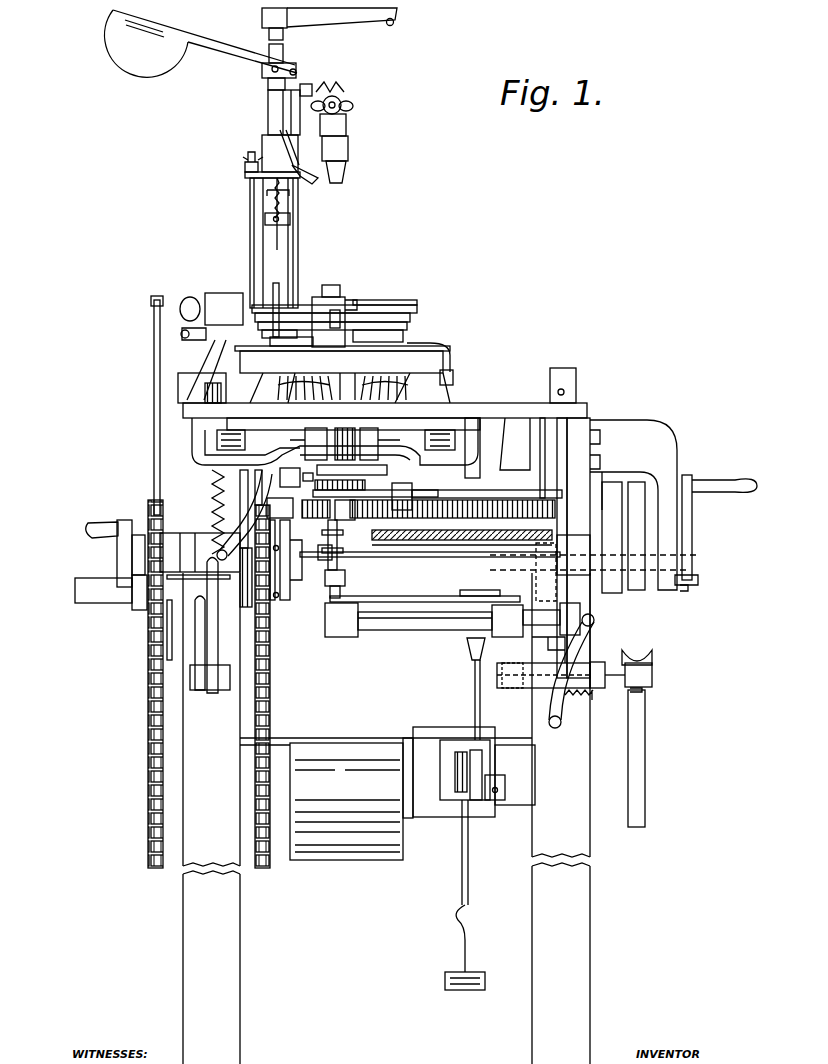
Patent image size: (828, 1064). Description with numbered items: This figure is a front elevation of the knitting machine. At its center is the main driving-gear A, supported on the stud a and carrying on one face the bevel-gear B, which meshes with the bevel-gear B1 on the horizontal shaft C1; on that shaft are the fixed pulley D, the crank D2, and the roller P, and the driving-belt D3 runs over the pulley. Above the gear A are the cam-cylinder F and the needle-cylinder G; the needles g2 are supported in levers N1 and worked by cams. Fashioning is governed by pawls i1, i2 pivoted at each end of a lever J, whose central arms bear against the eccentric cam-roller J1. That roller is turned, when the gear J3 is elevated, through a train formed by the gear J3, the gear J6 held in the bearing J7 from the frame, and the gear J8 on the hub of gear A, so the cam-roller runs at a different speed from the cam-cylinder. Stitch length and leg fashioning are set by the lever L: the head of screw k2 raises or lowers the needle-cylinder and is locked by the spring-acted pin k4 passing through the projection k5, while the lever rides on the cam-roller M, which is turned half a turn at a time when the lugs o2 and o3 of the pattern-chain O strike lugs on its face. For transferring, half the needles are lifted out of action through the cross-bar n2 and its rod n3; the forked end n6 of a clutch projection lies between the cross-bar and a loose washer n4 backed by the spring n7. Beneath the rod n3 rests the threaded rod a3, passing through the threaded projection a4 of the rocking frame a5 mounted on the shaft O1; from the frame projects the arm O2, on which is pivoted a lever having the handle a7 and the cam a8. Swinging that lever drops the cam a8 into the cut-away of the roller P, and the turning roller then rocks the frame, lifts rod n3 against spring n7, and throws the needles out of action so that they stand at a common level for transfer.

The needles g2 is at (395, 298).
The needle-cylinder G is at (415, 305).
The cam-cylinder F is at (395, 345).
The levers N1 is at (360, 392).
The bearing J7 is at (412, 442).
The pawl i1 is at (450, 412).
The pawl i2 is at (215, 412).
The lever J is at (327, 445).
The eccentric cam-roller J1 is at (286, 447).
The stud a is at (482, 465).
The lever L is at (218, 480).
The spring-acted pin k4 is at (197, 502).
The projection k5 is at (279, 508).
The gear J3 is at (350, 486).
The cross-bar n2 is at (368, 492).
The gear J6 is at (420, 492).
The gear J8 is at (485, 500).
The main driving-gear A is at (507, 505).
The head of screw k2 is at (300, 510).
The forked end n6 is at (345, 516).
The loose washer n4 is at (340, 532).
The spring n7 is at (342, 545).
The rod n3 is at (315, 554).
The threaded projection a4 is at (328, 572).
The rod a3 is at (342, 568).
The cam-roller M is at (290, 601).
The rocking frame a5 is at (337, 616).
The shaft O1 is at (383, 620).
The arm O2 is at (505, 618).
The lug o2 is at (275, 636).
The pattern-chain O is at (272, 690).
The lug o3 is at (272, 716).
The bevel-gear B is at (492, 540).
The bevel-gear B1 is at (530, 571).
The handle a7 is at (465, 595).
The cam a8 is at (530, 592).
The roller P is at (542, 599).
The fixed pulley D is at (608, 488).
The crank D2 is at (692, 517).
The shaft C1 is at (700, 561).
The driving-belt D3 is at (645, 748).